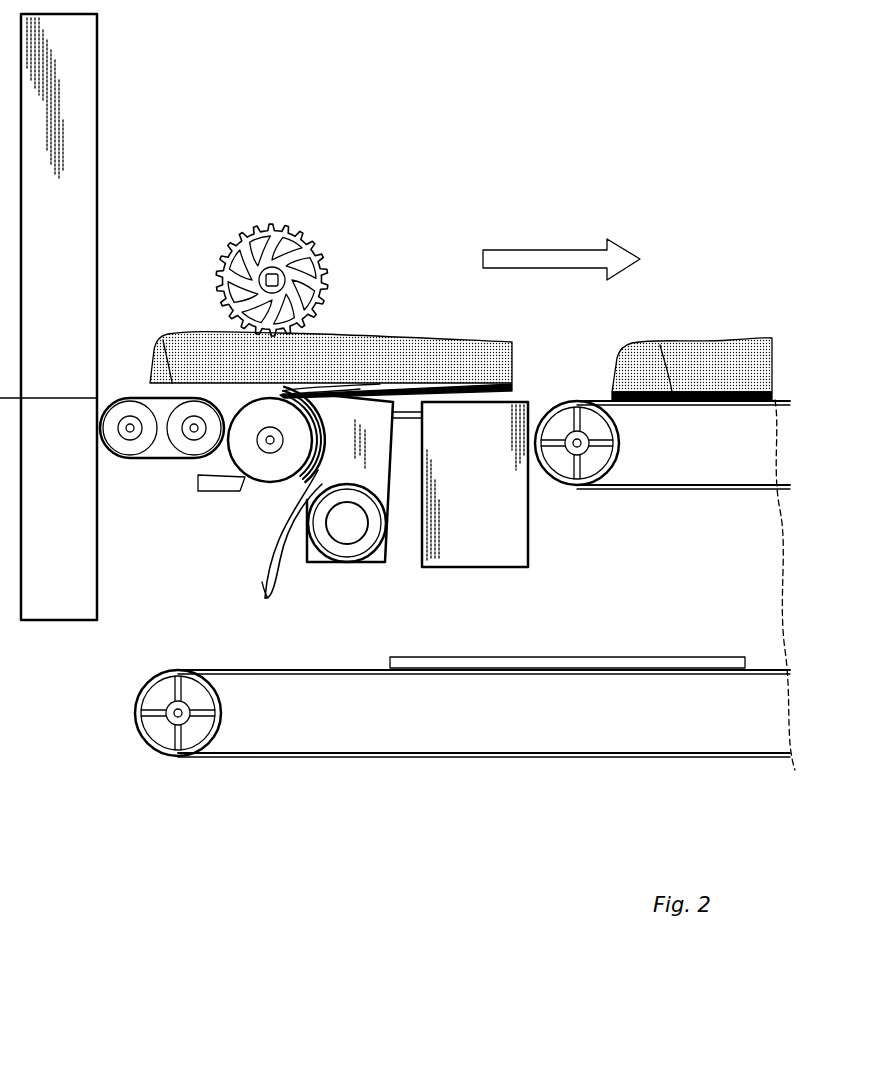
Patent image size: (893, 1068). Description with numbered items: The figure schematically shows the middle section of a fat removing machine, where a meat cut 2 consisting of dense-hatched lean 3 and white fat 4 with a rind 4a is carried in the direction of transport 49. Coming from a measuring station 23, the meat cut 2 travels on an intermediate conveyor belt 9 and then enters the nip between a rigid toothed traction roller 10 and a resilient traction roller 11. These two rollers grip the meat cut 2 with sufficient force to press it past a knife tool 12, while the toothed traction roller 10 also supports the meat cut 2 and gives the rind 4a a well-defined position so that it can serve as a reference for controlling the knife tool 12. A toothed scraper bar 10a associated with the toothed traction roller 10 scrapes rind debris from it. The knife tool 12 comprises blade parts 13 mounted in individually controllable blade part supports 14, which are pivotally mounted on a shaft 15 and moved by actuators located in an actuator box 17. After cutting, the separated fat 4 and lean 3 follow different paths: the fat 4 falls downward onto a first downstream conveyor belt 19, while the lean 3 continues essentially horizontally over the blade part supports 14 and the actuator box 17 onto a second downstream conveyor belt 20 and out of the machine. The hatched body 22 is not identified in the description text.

The meat cut 2 is at (462, 334).
The lean 3 is at (500, 372).
The fat 4 is at (268, 592).
The rind 4a is at (262, 582).
The intermediate conveyor belt 9 is at (150, 462).
The toothed traction roller 10 is at (268, 468).
The scraper bar 10a is at (198, 484).
The resilient traction roller 11 is at (272, 228).
The knife tool 12 is at (398, 382).
The blade part 13 is at (338, 388).
The blade part support 14 is at (385, 480).
The shaft 15 is at (343, 537).
The actuator box 17 is at (515, 535).
The first downstream conveyor belt 19 is at (212, 669).
The second downstream conveyor belt 20 is at (585, 400).
The product body 22 is at (160, 345).
The measuring station 23 is at (90, 75).
The direction of transport 49 is at (566, 248).